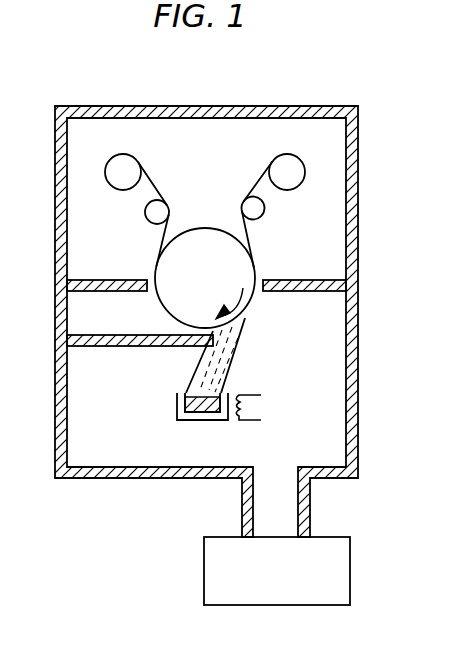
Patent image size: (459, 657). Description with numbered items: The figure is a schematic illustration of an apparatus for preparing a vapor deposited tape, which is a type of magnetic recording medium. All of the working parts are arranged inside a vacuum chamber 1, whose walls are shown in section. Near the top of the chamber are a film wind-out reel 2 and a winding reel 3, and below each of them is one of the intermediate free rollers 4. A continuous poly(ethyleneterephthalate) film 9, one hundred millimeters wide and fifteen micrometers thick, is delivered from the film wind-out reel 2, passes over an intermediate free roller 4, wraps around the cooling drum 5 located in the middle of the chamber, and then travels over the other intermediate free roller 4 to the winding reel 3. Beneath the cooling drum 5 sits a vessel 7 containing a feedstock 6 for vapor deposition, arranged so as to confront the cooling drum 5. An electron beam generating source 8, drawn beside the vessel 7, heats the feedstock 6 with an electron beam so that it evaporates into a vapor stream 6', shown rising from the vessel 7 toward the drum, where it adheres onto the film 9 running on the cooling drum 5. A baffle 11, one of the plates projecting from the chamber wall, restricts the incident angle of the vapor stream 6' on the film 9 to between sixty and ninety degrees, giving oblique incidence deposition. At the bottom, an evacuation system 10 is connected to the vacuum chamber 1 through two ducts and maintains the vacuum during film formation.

The vacuum chamber 1 is at (359, 171).
The film wind-out reel 2 is at (302, 161).
The winding reel 3 is at (139, 160).
The intermediate free rollers 4 is at (168, 206).
The cooling drum 5 is at (159, 273).
The feedstock for vapor deposition 6 is at (202, 425).
The vapor stream 6' is at (232, 355).
The vessel 7 is at (177, 411).
The electron beam generating source 8 is at (265, 407).
The continuous poly(ethyleneterephthalate) film 9 is at (250, 240).
The evacuation system 10 is at (345, 565).
The baffle 11 is at (131, 347).